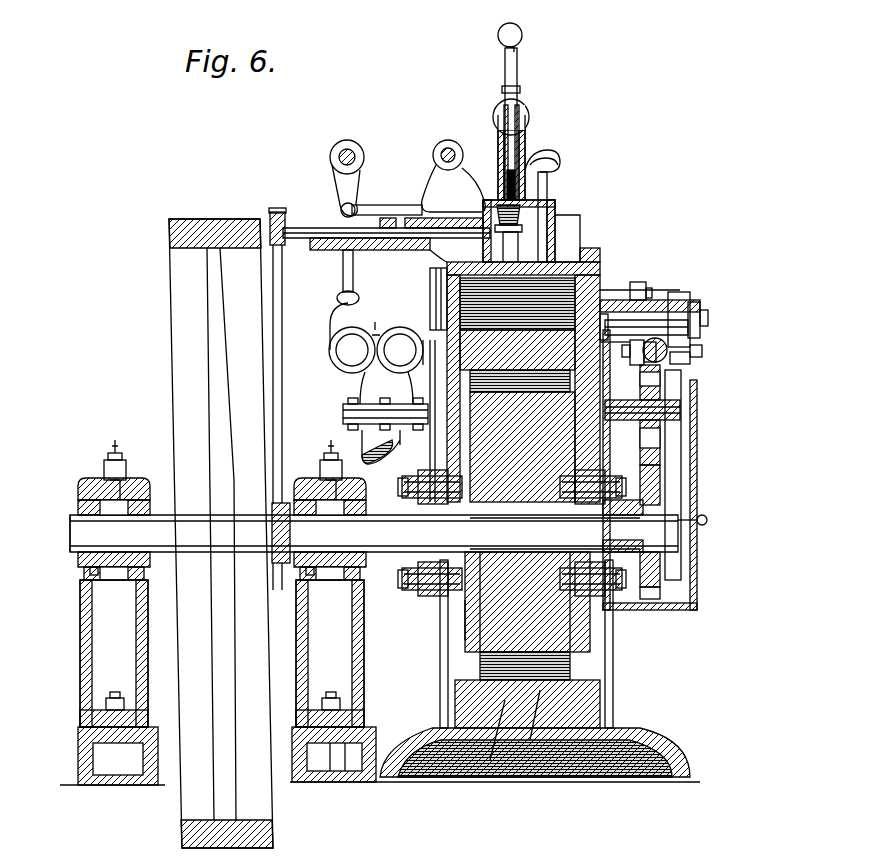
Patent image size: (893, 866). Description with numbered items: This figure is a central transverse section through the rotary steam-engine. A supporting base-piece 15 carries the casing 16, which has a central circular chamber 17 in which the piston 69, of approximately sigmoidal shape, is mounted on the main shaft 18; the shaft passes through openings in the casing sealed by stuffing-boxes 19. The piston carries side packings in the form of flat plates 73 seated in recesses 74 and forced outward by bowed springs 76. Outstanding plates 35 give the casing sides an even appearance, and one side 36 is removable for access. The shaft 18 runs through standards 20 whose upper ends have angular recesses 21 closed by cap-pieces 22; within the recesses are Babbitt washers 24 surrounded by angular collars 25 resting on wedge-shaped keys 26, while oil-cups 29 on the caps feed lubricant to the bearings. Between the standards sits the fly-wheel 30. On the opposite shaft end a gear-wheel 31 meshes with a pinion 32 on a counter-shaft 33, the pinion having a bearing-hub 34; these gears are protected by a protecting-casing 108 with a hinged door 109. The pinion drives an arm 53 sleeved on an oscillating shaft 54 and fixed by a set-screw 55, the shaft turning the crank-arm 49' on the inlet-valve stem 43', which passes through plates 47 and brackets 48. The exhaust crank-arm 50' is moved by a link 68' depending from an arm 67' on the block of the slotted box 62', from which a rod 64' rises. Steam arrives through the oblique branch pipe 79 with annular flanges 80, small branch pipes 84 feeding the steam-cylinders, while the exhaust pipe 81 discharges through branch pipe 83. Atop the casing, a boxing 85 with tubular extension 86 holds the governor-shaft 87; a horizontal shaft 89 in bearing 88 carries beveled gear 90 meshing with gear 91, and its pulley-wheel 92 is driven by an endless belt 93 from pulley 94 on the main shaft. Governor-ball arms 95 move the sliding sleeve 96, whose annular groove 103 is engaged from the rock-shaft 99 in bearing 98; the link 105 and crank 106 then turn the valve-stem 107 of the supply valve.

The supporting base-piece 15 is at (640, 760).
The casing 16 is at (468, 634).
The central circular chamber 17 is at (525, 700).
The shaft 18 is at (70, 535).
The stuffing-boxes 19 is at (415, 572).
The standards 20 is at (80, 678).
The angularly-shaped recesses 21 is at (84, 578).
The cap-pieces 22 is at (84, 490).
The washers 24 is at (113, 565).
The angular collars 25 is at (84, 568).
The wedge-shaped keys 26 is at (118, 582).
The oil-cups 29 is at (120, 455).
The fly-wheel 30 is at (170, 296).
The gear-wheel 31 is at (665, 600).
The pinion 32 is at (660, 380).
The counter-shaft 33 is at (680, 410).
The bearing-hub 34 is at (660, 432).
The outstanding plates 35 is at (440, 666).
The removable side of casing 36 is at (575, 660).
The inlet-valve stem 43' is at (674, 314).
The plates 47 is at (610, 298).
The brackets 48 is at (676, 292).
The crank-arm 49' is at (674, 341).
The crank-arm 50' is at (732, 350).
The arm 53 is at (682, 450).
The oscillating shaft 54 is at (700, 350).
The set-screw 55 is at (665, 345).
The slotted box 62' is at (567, 222).
The rod 64' is at (567, 210).
The arm 67' is at (652, 256).
The link 68' is at (659, 273).
The piston 69 is at (500, 700).
The flat plates 73 is at (455, 470).
The recesses 74 is at (403, 627).
The bowed springs 76 is at (550, 790).
The branch pipe 79 is at (329, 350).
The annular flanges 80 is at (432, 272).
The exhaust pipe 81 is at (358, 378).
The branch pipe 83 is at (380, 456).
The small branch pipes 84 is at (343, 278).
The boxing 85 is at (522, 218).
The tubular extension 86 is at (555, 205).
The governor-shaft 87 is at (517, 68).
The bearing 88 is at (395, 250).
The horizontal shaft 89 is at (303, 226).
The beveled gear 90 is at (560, 250).
The gear 91 is at (580, 222).
The pulley-wheel 92 is at (270, 213).
The endless belt 93 is at (282, 318).
The pulley 94 is at (272, 520).
The governor-ball arms 95 is at (516, 40).
The sliding sleeve 96 is at (520, 115).
The bearing 98 is at (450, 140).
The rock-shaft 99 is at (438, 152).
The annular groove 103 is at (528, 152).
The link 105 is at (398, 205).
The crank 106 is at (355, 185).
The valve-stem 107 is at (347, 140).
The protecting-casing 108 is at (650, 610).
The hinged door 109 is at (697, 568).